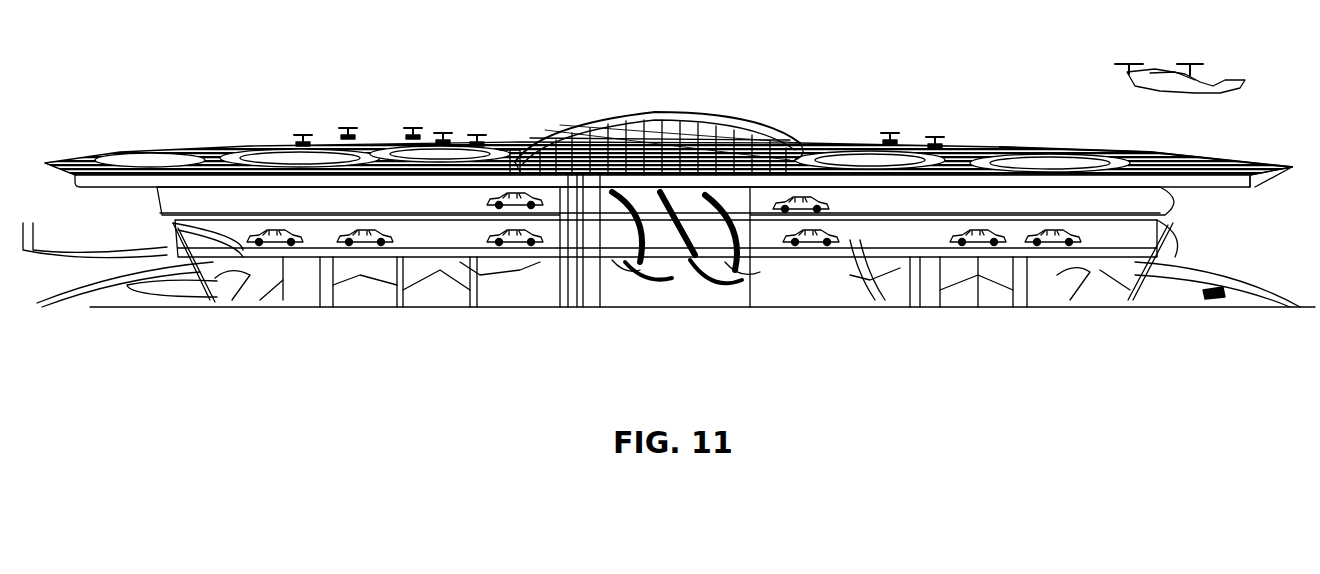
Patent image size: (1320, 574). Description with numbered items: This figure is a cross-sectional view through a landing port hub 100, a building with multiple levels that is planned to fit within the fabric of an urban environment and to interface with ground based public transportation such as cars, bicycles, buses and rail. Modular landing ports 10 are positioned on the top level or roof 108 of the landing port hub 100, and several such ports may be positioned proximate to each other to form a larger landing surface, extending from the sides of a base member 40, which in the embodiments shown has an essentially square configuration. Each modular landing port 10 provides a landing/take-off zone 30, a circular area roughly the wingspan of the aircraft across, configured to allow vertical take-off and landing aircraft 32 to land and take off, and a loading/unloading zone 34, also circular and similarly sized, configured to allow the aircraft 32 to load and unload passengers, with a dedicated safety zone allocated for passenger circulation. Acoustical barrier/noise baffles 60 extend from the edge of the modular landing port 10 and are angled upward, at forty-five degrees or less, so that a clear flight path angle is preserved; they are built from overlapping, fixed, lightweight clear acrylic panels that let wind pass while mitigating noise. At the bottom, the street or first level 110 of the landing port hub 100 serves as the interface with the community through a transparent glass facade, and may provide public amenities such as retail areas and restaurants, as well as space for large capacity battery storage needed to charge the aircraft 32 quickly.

The modular landing port 10 is at (330, 100).
The landing/take-off zone 30 is at (172, 165).
The vertical take-off and landing aircraft 32 is at (915, 140).
The loading/unloading zone 34 is at (490, 138).
The base member 40 is at (690, 160).
The acoustical barrier/noise baffle 60 is at (90, 160).
The landing port hub 100 is at (822, 90).
The roof 108 is at (1210, 158).
The first level 110 is at (822, 292).